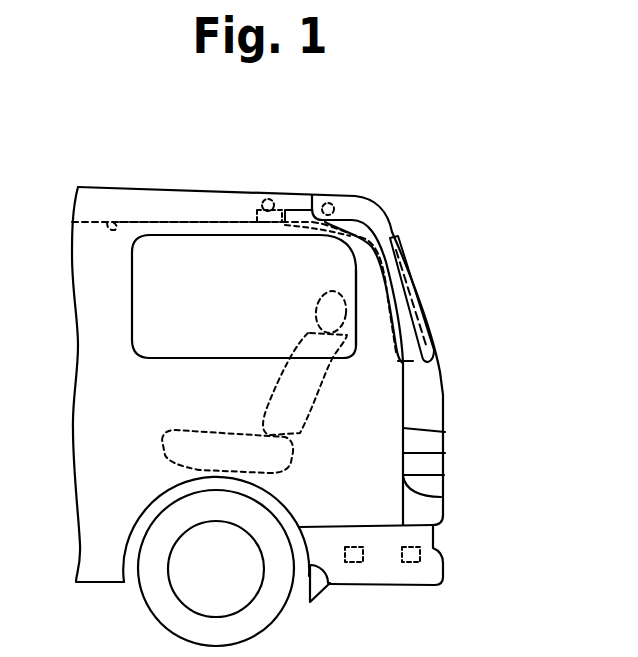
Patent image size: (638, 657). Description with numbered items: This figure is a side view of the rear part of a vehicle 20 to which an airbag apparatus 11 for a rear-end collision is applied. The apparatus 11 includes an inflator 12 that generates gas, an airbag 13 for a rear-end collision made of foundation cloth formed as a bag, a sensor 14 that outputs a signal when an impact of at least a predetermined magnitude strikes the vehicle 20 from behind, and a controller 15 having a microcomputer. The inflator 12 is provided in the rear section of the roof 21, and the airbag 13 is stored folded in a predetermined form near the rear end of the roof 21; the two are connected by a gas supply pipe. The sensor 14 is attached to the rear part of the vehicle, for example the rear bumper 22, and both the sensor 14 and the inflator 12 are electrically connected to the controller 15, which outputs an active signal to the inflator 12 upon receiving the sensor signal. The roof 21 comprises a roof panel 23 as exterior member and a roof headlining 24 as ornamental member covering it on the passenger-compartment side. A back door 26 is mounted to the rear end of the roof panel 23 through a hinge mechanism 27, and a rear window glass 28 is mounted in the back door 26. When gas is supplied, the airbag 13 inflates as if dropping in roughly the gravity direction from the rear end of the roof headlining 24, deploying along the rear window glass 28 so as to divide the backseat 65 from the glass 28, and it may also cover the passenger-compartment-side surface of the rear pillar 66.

The airbag apparatus for a rear-end collision 11 is at (403, 202).
The vehicle 20 is at (494, 207).
The roof 21 is at (97, 142).
The roof panel 23 is at (193, 189).
The roof headlining 24 is at (108, 222).
The inflator 12 is at (265, 198).
The airbag for a rear-end collision 13 is at (290, 208).
The hinge mechanism 27 is at (330, 205).
The rear window glass 28 is at (437, 348).
The back door 26 is at (425, 403).
The rear pillar 66 is at (356, 268).
The backseat 65 is at (265, 390).
The rear bumper 22 is at (443, 563).
The sensor 14 is at (411, 562).
The controller 15 is at (354, 562).